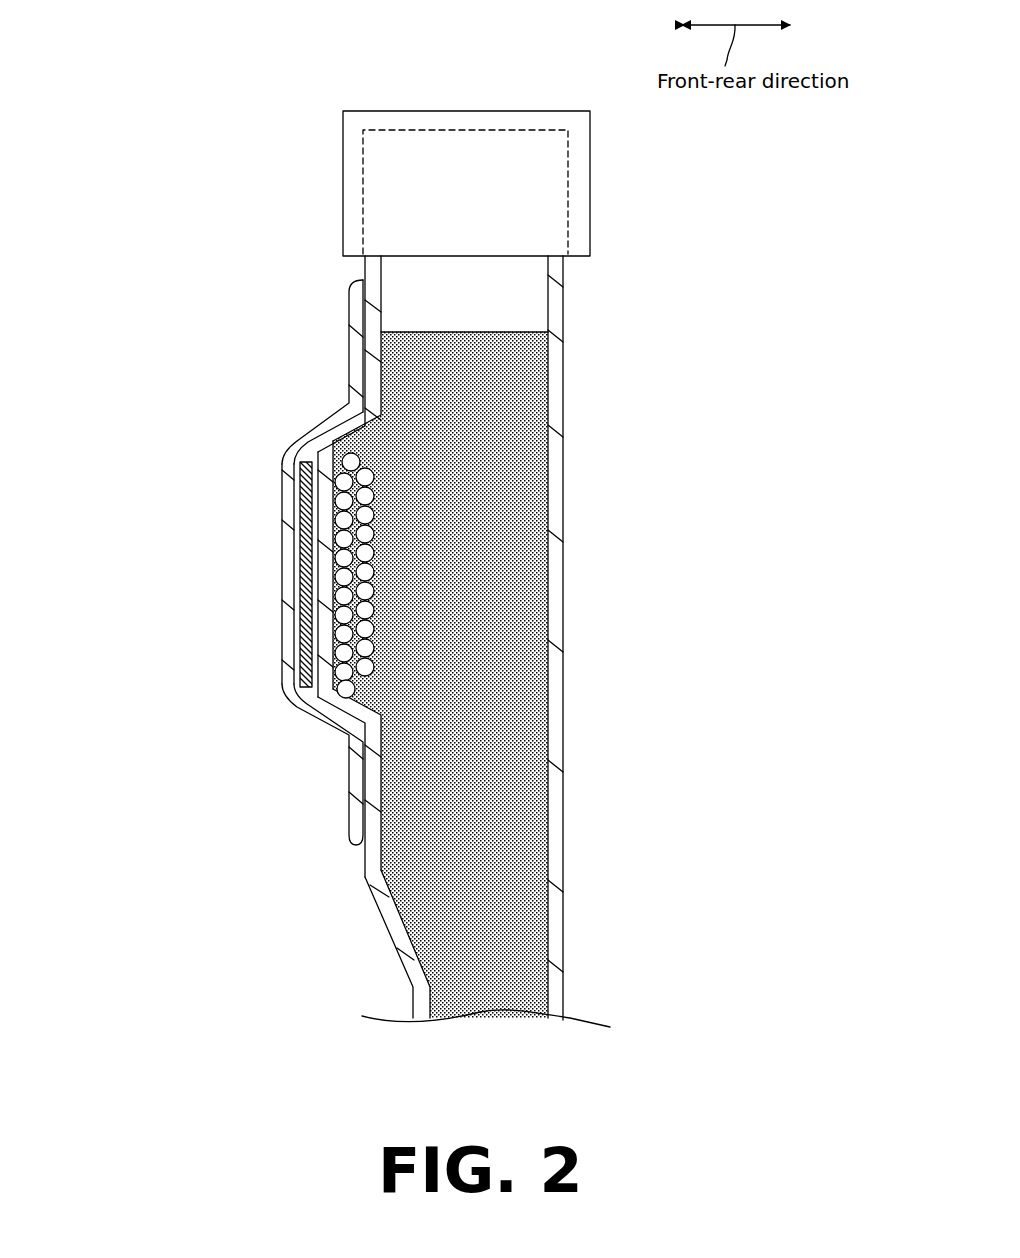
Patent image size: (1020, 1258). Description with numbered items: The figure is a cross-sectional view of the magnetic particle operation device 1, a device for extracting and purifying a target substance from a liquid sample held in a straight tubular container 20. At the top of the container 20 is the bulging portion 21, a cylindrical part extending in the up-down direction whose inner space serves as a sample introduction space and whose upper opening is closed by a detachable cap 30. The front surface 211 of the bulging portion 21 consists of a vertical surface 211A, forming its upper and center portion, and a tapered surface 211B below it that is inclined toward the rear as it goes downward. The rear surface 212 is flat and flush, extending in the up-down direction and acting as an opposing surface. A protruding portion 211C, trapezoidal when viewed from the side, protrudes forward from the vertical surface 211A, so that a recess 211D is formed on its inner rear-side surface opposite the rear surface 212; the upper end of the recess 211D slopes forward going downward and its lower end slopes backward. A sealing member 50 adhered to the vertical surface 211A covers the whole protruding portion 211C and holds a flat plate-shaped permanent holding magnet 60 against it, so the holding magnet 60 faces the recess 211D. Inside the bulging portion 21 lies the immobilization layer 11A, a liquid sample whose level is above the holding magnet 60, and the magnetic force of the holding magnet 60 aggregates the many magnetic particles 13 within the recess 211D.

The magnetic particle operation device 1 is at (647, 311).
The immobilization layer 11A is at (495, 878).
The magnetic particles 13 is at (348, 684).
The container 20 is at (566, 436).
The bulging portion 21 is at (566, 633).
The front surface 211 is at (362, 878).
The vertical surface 211A is at (377, 312).
The tapered surface 211B is at (390, 925).
The protruding portion 211C is at (300, 446).
The recess 211D is at (345, 550).
The rear surface 212 is at (565, 735).
The cap 30 is at (590, 190).
The sealing member 50 is at (349, 370).
The holding magnet 60 is at (305, 580).